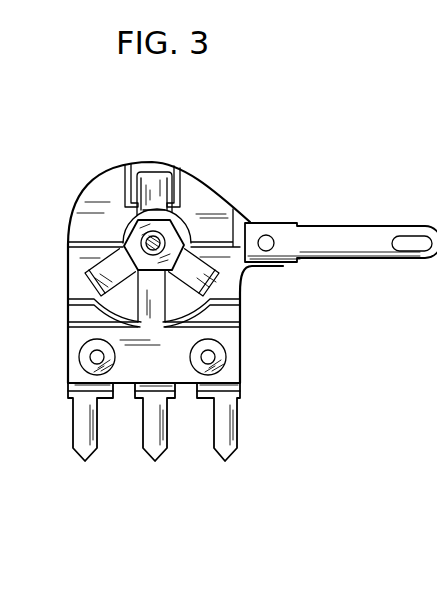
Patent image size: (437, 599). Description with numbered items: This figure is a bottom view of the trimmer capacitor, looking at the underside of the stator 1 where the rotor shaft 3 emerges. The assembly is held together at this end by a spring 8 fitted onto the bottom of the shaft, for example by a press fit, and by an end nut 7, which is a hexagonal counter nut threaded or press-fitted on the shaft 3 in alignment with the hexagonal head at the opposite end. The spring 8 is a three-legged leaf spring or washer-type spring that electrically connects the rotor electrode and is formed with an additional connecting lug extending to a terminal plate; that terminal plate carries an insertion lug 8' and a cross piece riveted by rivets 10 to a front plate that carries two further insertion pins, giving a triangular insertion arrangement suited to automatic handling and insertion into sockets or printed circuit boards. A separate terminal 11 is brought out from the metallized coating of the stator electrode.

The stator 1 is at (214, 203).
The rotor shaft 3 is at (162, 270).
The end nut 7 is at (128, 240).
The spring 8 is at (158, 170).
The insertion lug 8' is at (154, 422).
The rivets 10 is at (224, 352).
The terminal 11 is at (364, 237).